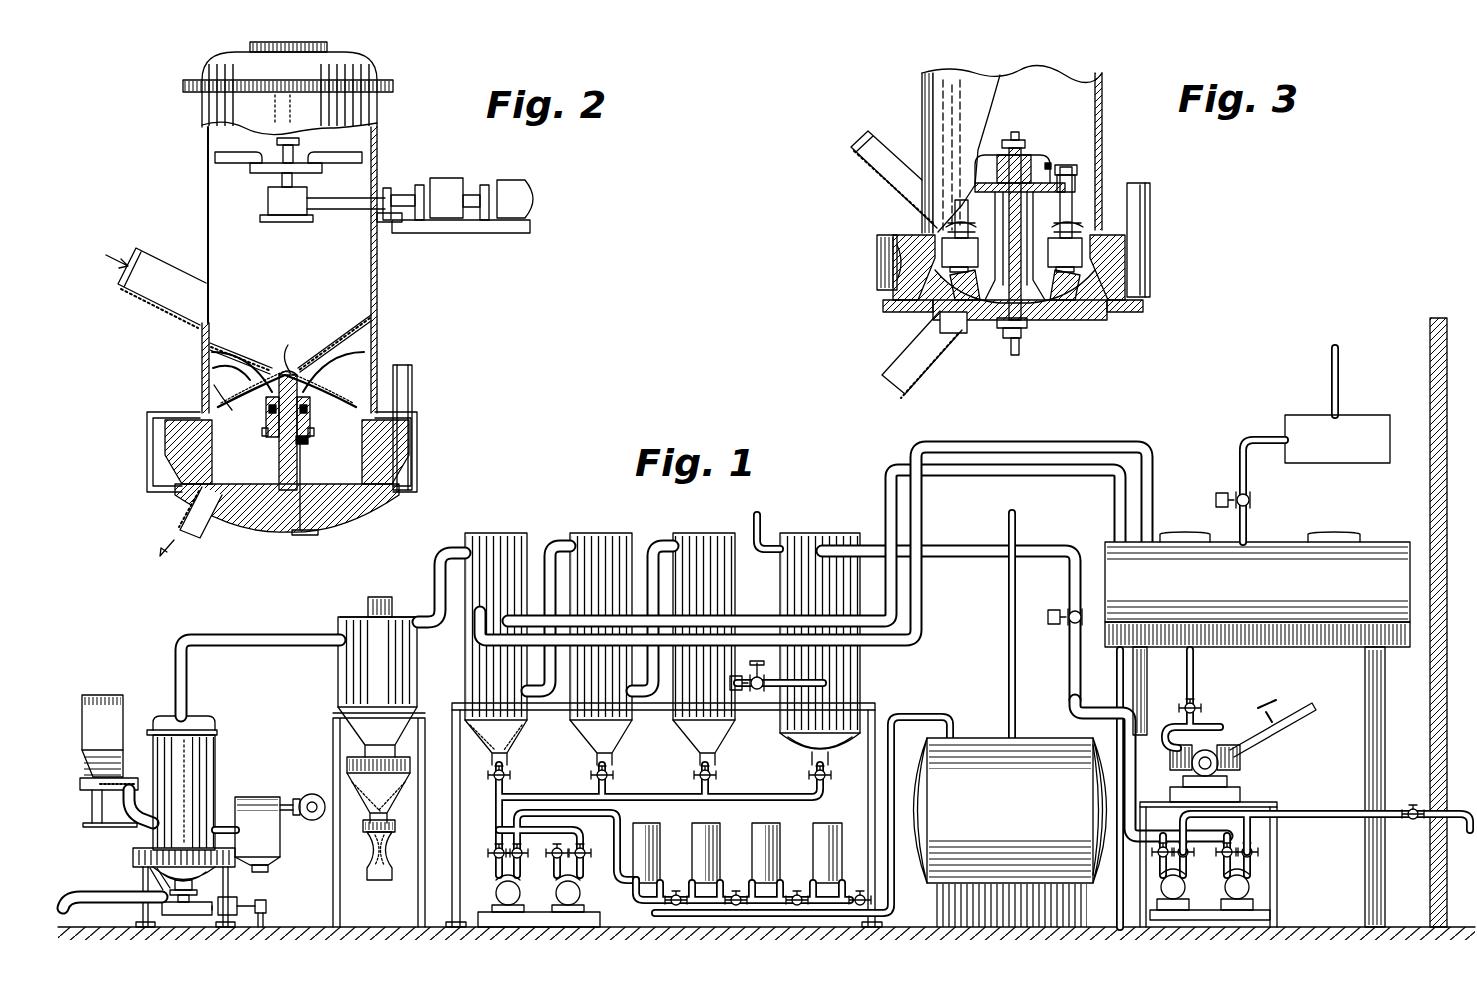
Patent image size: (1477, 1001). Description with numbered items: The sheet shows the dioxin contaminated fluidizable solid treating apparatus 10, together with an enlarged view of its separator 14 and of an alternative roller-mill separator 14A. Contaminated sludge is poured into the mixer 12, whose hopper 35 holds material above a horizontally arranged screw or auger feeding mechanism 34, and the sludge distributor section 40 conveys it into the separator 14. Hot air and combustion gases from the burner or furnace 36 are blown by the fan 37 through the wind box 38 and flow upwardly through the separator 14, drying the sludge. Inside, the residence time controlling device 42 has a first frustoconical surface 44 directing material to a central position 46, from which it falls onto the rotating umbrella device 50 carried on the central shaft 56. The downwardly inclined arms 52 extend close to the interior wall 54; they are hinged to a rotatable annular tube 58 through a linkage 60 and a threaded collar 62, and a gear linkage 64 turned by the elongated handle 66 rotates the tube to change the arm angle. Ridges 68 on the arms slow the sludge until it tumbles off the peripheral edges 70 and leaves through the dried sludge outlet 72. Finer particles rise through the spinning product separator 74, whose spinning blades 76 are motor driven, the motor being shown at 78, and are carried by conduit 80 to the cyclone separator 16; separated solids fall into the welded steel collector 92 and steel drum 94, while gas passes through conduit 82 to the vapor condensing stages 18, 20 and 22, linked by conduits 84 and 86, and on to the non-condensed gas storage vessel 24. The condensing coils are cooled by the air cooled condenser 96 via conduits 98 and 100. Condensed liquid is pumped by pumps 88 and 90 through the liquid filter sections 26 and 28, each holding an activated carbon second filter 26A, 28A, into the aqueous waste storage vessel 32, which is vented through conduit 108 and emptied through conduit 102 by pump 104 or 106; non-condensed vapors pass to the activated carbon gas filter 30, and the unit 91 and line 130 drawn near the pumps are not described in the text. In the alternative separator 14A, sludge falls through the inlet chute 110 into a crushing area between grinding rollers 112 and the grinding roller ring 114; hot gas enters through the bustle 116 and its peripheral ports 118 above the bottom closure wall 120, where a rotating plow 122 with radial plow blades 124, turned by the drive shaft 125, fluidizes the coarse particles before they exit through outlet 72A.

In FIG. 1, the dioxin contaminated fluidizable solid treating apparatus 10 is at (382, 578).
In FIG. 1, the mixer 12 is at (108, 732).
In FIG. 2, the separator 14 is at (178, 215).
In FIG. 1, the separator 14 is at (211, 806).
In FIG. 3, the separator 14A is at (892, 93).
In FIG. 1, the cyclone separator 16 is at (346, 622).
In FIG. 1, the first vapor condensing stage 18 is at (506, 535).
In FIG. 1, the vapor condensing stage 20 is at (611, 535).
In FIG. 1, the vapor condensing stage 22 is at (719, 535).
In FIG. 1, the non-condensed gas storage vessel 24 is at (829, 535).
In FIG. 1, the liquid filter section 26 is at (648, 835).
In FIG. 1, the liquid filter section 28 is at (708, 835).
In FIG. 1, the second filter 26A is at (790, 820).
In FIG. 1, the second filter 28A is at (850, 820).
In FIG. 1, the activated carbon gas filter 30 is at (1338, 463).
In FIG. 1, the aqueous waste storage vessel 32 is at (988, 737).
In FIG. 1, the screw or auger feeding mechanism 34 is at (86, 792).
In FIG. 1, the hopper 35 is at (92, 714).
In FIG. 1, the burner or furnace 36 is at (256, 800).
In FIG. 1, the fan 37 is at (312, 794).
In FIG. 2, the wind box 38 is at (416, 466).
In FIG. 1, the wind box 38 is at (236, 862).
In FIG. 1, the sludge distributor section 40 is at (126, 750).
In FIG. 2, the residence time controlling device 42 is at (362, 345).
In FIG. 2, the first frustoconical surface 44 is at (350, 326).
In FIG. 2, the central position 46 is at (290, 368).
In FIG. 2, the rotating umbrella device 50 is at (326, 380).
In FIG. 2, the umbrella arms 52 is at (212, 370).
In FIG. 2, the interior wall 54 is at (362, 398).
In FIG. 2, the central shaft 56 is at (274, 432).
In FIG. 2, the rotatable annular tube 58 is at (303, 432).
In FIG. 2, the linkage 60 is at (308, 410).
In FIG. 2, the threaded collar 62 is at (268, 410).
In FIG. 2, the gear linkage 64 is at (306, 443).
In FIG. 2, the elongated handle 66 is at (286, 530).
In FIG. 2, the ridges 68 is at (208, 345).
In FIG. 2, the peripheral edges 70 is at (212, 396).
In FIG. 2, the dried sludge outlet 72 is at (180, 530).
In FIG. 1, the dried sludge outlet 72 is at (150, 880).
In FIG. 3, the discharge outlet 72A is at (906, 372).
In FIG. 2, the spinning product separator 74 is at (335, 208).
In FIG. 2, the spinning blades 76 is at (350, 152).
In FIG. 2, the drive motor 78 is at (445, 182).
In FIG. 1, the conduit 80 is at (258, 633).
In FIG. 1, the conduit 82 is at (437, 598).
In FIG. 1, the conduit 84 is at (551, 545).
In FIG. 1, the conduit 86 is at (655, 545).
In FIG. 1, the pump 88 is at (975, 545).
In FIG. 1, the pump 90 is at (1338, 378).
In FIG. 1, the compressor 91 is at (1222, 764).
In FIG. 1, the welded steel collector 92 is at (348, 778).
In FIG. 1, the steel drum 94 is at (376, 880).
In FIG. 1, the air cooled condenser 96 is at (1285, 542).
In FIG. 1, the conduit 98 is at (880, 480).
In FIG. 1, the conduit 100 is at (1030, 447).
In FIG. 1, the conduit 102 is at (1075, 713).
In FIG. 1, the pump 104 is at (1160, 893).
In FIG. 1, the pump 106 is at (1265, 888).
In FIG. 1, the conduit 108 is at (1018, 526).
In FIG. 3, the inlet chute 110 is at (862, 176).
In FIG. 3, the grinding rollers 112 is at (938, 226).
In FIG. 3, the grinding roller ring 114 is at (878, 260).
In FIG. 3, the hot gas receiving bustle 116 is at (1152, 278).
In FIG. 3, the peripheral hot gas ports 118 is at (1106, 306).
In FIG. 3, the bottom closure wall 120 is at (1088, 320).
In FIG. 3, the rotating plow 122 is at (1058, 326).
In FIG. 3, the radial plow blades 124 is at (958, 306).
In FIG. 3, the drive shaft 125 is at (1008, 356).
In FIG. 1, the discharge line 130 is at (1325, 815).